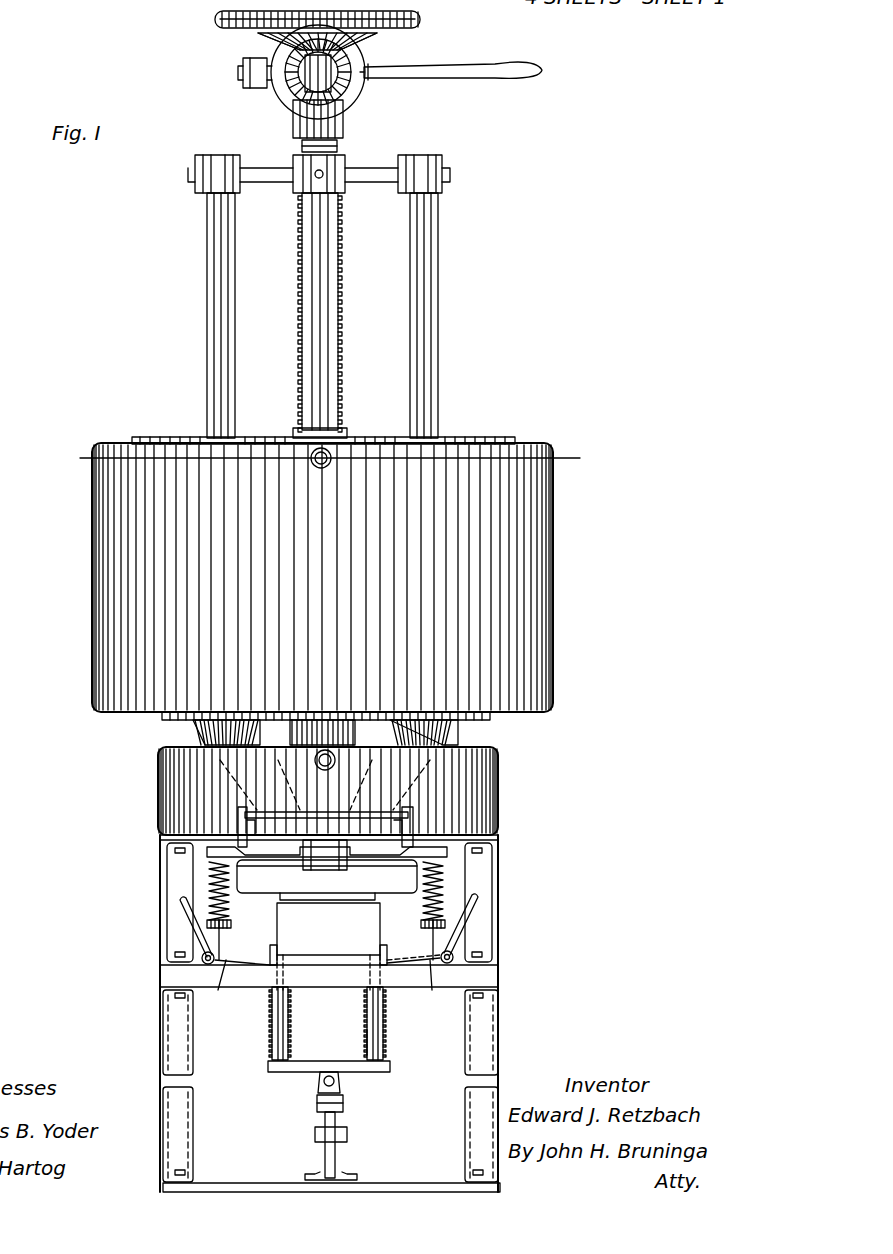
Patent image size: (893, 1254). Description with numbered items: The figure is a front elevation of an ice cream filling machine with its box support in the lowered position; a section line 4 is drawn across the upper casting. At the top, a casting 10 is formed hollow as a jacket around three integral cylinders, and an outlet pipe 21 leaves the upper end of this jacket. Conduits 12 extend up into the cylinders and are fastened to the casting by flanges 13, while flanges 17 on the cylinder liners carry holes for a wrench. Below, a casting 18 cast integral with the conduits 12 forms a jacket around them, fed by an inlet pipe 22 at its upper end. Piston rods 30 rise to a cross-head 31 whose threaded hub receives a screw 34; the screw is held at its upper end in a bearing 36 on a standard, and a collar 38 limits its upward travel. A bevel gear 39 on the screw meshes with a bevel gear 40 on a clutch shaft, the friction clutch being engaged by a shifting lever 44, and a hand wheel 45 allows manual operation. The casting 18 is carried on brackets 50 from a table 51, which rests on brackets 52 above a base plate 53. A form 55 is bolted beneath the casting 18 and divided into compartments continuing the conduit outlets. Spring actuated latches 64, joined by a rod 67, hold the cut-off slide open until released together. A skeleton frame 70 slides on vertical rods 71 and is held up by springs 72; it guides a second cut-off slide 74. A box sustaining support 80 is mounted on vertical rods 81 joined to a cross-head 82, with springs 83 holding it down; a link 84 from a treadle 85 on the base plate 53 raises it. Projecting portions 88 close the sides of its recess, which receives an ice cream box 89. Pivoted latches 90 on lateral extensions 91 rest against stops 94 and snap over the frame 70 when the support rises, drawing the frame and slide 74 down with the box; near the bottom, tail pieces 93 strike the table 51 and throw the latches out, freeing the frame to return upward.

The section line 4- 4 is at (318, 459).
The casting 10 is at (553, 550).
The conduits 12 is at (200, 730).
The flanges 13 is at (165, 718).
The flanges 17 is at (510, 437).
The casting 18 is at (498, 790).
The outlet pipe 21 is at (330, 451).
The inlet pipe 22 is at (315, 755).
The piston rods 30 is at (207, 300).
The cross-head 31 is at (360, 186).
The screw 34 is at (340, 265).
The bearing 36 is at (345, 115).
The collar 38 is at (338, 146).
The bevel gear 39 is at (365, 38).
The bevel gear 40 is at (272, 102).
The shifting lever 44 is at (544, 72).
The hand wheel 45 is at (421, 20).
The brackets 50 is at (160, 885).
The table 51 is at (160, 975).
The brackets 52 is at (163, 1028).
The base plate 53 is at (272, 1183).
The form 55 is at (380, 880).
The spring actuated latches 64 is at (238, 822).
The rod 67 is at (300, 812).
The skeleton frame 70 is at (447, 852).
The vertical rods 71 is at (231, 927).
The springs 72 is at (207, 885).
The cut-off slide 74 is at (338, 866).
The box sustaining support 80 is at (350, 985).
The vertical rods 81 is at (272, 1018).
The cross-head 82 is at (345, 1060).
The springs 83 is at (385, 1020).
The link 84 is at (340, 1088).
The treadle 85 is at (316, 1102).
The projecting portions 88 is at (270, 955).
The ice cream box 89 is at (328, 929).
The pivoted latches 90 is at (178, 930).
The lateral extensions 91 is at (440, 957).
The tail pieces 93 is at (220, 992).
The stops 94 is at (478, 932).